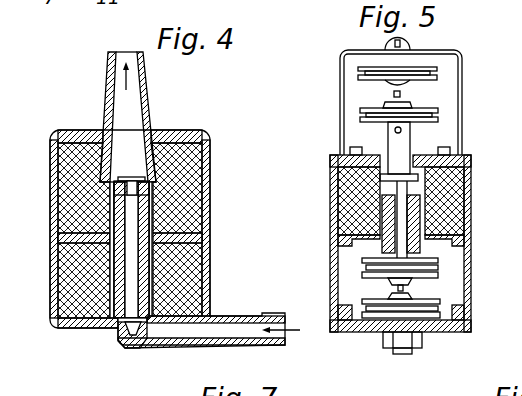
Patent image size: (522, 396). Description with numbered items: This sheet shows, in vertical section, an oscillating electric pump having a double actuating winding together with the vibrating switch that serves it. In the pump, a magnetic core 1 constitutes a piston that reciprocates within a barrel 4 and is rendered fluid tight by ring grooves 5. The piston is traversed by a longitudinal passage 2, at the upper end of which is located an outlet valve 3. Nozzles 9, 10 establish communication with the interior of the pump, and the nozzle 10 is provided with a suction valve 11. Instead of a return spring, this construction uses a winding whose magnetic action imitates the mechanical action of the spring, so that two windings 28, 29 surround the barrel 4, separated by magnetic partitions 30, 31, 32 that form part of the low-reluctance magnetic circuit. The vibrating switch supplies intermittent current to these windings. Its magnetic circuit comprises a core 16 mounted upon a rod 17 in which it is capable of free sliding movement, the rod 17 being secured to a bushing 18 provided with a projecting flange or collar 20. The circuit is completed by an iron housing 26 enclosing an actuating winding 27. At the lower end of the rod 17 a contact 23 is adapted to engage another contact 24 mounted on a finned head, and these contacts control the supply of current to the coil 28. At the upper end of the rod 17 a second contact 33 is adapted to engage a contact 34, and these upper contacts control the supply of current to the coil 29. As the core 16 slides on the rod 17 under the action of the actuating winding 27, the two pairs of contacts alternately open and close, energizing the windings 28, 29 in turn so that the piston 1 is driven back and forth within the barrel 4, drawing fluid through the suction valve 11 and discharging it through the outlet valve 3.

In FIG. 4, the core 1 is at (143, 210).
In FIG. 4, the longitudinal passage 2 is at (131, 250).
In FIG. 4, the outlet valve 3 is at (131, 177).
In FIG. 4, the barrel 4 is at (152, 266).
In FIG. 4, the ring grooves 5 is at (111, 197).
In FIG. 4, the nozzle 9 is at (134, 104).
In FIG. 4, the nozzle 10 is at (232, 326).
In FIG. 4, the suction valve 11 is at (130, 342).
In FIG. 5, the core 16 is at (432, 257).
In FIG. 5, the rod 17 is at (455, 170).
In FIG. 5, the bushing 18 is at (405, 135).
In FIG. 5, the projecting flange 20 is at (375, 183).
In FIG. 5, the contact 23 is at (394, 287).
In FIG. 5, the contact 24 is at (385, 300).
In FIG. 5, the iron housing 26 is at (335, 230).
In FIG. 5, the actuating winding 27 is at (456, 216).
In FIG. 4, the winding 28 is at (190, 168).
In FIG. 4, the winding 29 is at (75, 296).
In FIG. 4, the magnetic partition 30 is at (70, 130).
In FIG. 4, the magnetic partition 31 is at (100, 238).
In FIG. 4, the magnetic partition 32 is at (78, 330).
In FIG. 5, the second contact 33 is at (404, 96).
In FIG. 5, the contact 34 is at (380, 86).